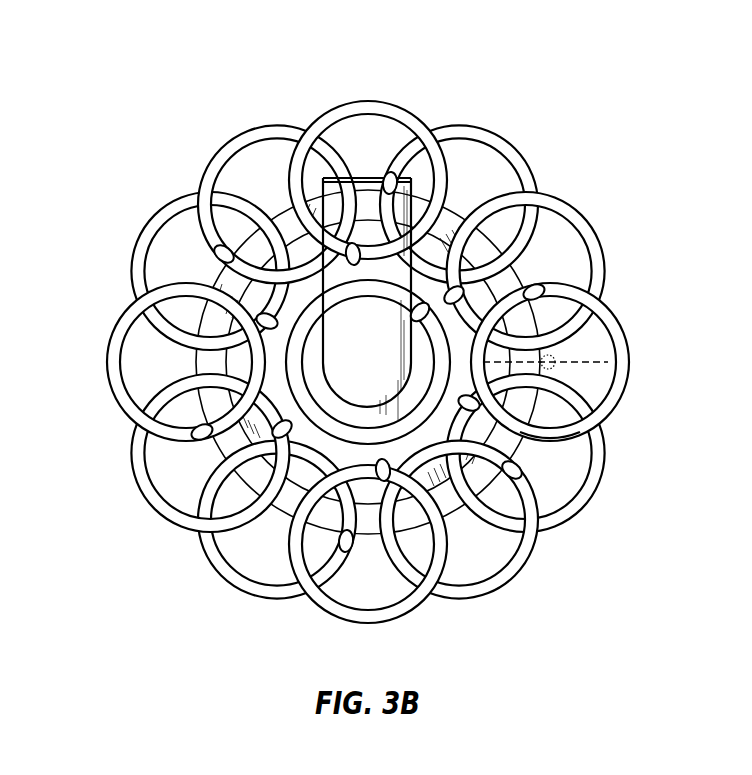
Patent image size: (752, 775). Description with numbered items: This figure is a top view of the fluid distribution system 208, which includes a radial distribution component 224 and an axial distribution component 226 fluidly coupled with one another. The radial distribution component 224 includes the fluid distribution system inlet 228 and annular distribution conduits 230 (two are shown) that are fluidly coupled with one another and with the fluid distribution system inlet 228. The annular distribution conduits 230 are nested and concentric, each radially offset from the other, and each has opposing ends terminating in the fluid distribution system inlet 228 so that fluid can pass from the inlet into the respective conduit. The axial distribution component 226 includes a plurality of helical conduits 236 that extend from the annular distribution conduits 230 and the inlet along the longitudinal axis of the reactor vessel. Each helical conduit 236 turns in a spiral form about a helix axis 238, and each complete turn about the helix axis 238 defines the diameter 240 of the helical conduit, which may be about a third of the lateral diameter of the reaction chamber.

The fluid distribution system 208 is at (130, 52).
The radial distribution component 224 is at (281, 208).
The axial distribution component 226 is at (578, 512).
The fluid distribution system inlet 228 is at (368, 175).
The annular distribution conduit 230 is at (503, 283).
The helical conduit 236 is at (594, 371).
The helix axis 238 is at (587, 428).
The diameter 240 is at (590, 357).